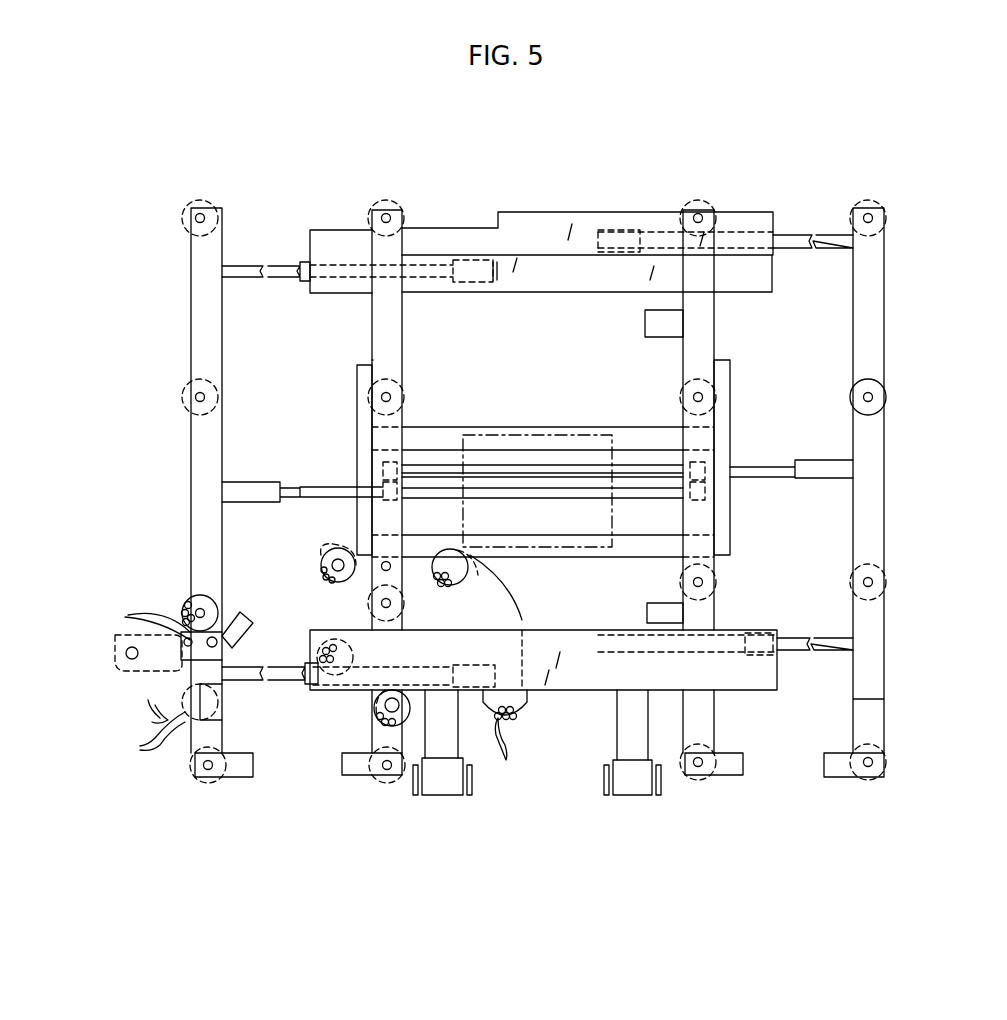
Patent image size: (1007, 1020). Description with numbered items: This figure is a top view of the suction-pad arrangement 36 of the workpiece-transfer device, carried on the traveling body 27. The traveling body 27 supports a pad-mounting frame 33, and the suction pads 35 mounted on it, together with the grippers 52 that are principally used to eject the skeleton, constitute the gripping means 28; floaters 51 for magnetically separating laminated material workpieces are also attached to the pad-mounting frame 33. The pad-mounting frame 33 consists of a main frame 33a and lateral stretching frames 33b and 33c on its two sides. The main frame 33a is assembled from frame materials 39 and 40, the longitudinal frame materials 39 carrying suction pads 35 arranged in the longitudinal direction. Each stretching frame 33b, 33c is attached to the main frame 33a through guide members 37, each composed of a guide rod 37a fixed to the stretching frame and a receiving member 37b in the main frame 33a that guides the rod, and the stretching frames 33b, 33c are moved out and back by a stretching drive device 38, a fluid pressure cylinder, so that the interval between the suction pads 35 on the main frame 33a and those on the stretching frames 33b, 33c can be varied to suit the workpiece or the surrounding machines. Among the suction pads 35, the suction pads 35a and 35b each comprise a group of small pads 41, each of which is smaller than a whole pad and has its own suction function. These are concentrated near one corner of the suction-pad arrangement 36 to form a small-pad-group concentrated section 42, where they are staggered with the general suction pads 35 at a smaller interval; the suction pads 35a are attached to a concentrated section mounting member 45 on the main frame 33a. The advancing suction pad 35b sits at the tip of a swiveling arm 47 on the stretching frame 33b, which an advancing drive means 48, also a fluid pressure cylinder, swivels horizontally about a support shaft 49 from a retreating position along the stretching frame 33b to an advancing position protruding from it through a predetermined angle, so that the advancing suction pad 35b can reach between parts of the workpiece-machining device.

The traveling body 27 is at (612, 445).
The gripping means 28 is at (892, 398).
The pad-mounting frame 33 is at (537, 250).
The main frame 33a is at (368, 342).
The stretching frame 33b is at (203, 302).
The stretching frame 33c is at (886, 291).
The suction pad 35 is at (182, 220).
The suction pad 35a is at (190, 605).
The advancing suction pad 35b is at (190, 742).
The suction-pad arrangement 36 is at (886, 383).
The guide member 37 is at (358, 152).
The guide rod 37a is at (246, 262).
The receiving member 37b is at (328, 262).
The stretching drive device 38 is at (557, 490).
The frame material 39 is at (403, 318).
The frame material 40 is at (430, 437).
The small pad 41 is at (313, 744).
The small-pad-group concentrated section 42 is at (372, 713).
The concentrated section mounting member 45 is at (497, 612).
The swiveling arm 47 is at (138, 643).
The advancing drive means 48 is at (253, 632).
The support shaft 49 is at (188, 640).
The floater 51 is at (447, 778).
The gripper 52 is at (646, 323).